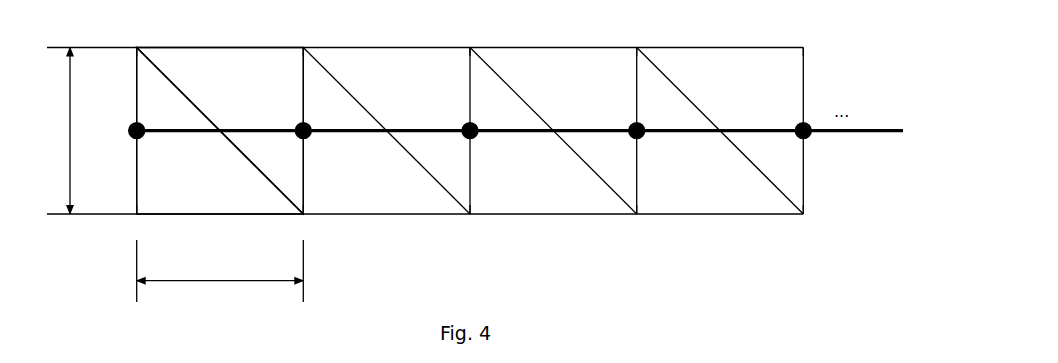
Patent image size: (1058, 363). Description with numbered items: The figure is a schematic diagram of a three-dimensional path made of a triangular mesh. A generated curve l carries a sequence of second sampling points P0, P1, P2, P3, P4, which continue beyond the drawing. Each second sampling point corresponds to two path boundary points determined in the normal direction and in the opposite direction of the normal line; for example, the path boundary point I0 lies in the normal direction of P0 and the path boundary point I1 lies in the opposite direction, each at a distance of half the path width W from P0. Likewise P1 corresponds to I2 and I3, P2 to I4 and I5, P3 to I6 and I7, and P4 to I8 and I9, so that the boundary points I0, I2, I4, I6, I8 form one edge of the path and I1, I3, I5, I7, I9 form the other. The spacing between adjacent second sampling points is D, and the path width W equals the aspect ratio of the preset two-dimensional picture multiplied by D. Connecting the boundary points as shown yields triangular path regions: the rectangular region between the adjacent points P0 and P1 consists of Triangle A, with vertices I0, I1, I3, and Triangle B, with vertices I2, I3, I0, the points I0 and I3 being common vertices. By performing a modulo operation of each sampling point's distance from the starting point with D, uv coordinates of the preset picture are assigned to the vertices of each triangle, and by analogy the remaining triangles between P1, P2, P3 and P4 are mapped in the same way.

The path boundary point I0 is at (131, 41).
The path boundary point I1 is at (131, 223).
The path boundary point I2 is at (298, 41).
The path boundary point I3 is at (298, 223).
The path boundary point I4 is at (465, 41).
The path boundary point I5 is at (465, 223).
The path boundary point I6 is at (631, 41).
The path boundary point I7 is at (631, 223).
The path boundary point I8 is at (798, 41).
The path boundary point I9 is at (798, 223).
The second sampling point P0 is at (125, 137).
The second sampling point P1 is at (292, 137).
The second sampling point P2 is at (459, 137).
The second sampling point P3 is at (625, 137).
The second sampling point P4 is at (792, 137).
The triangle A is at (220, 131).
The triangle B is at (220, 131).
The path width W is at (56, 131).
The distance between adjacent second sampling points D is at (220, 271).
The generated curve l is at (520, 144).